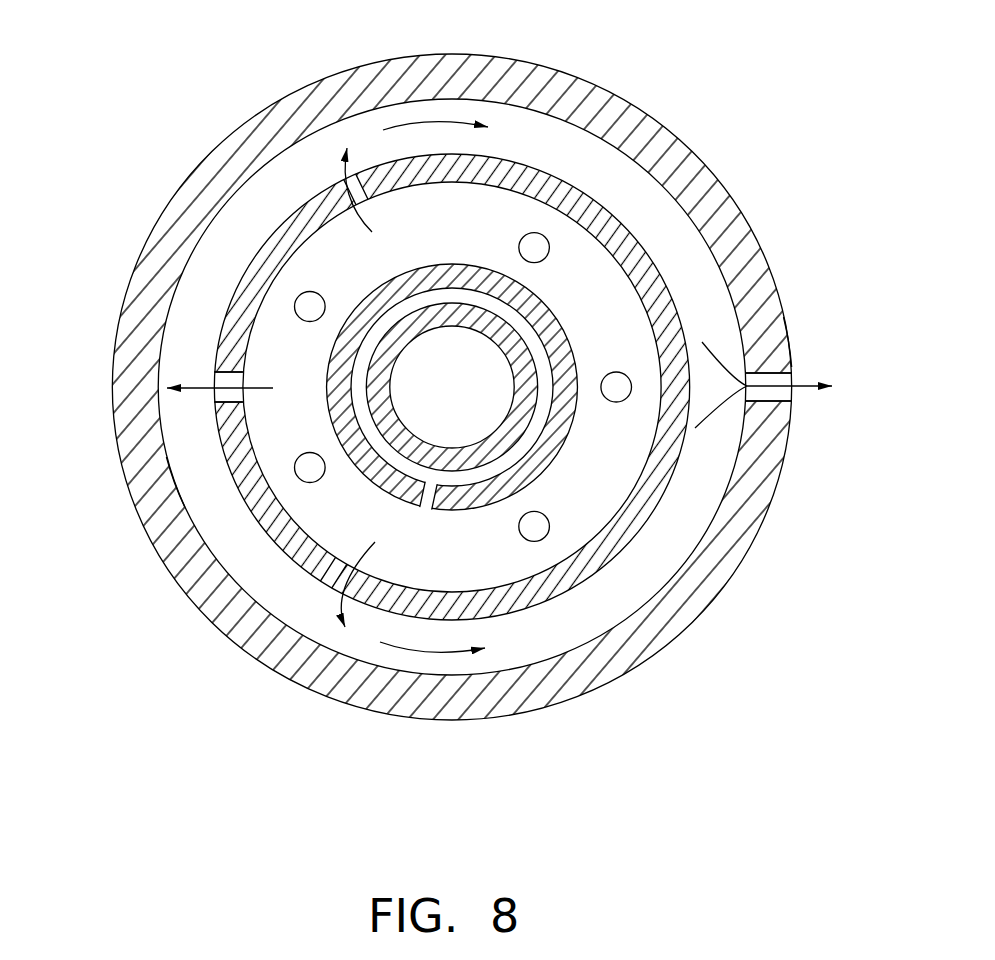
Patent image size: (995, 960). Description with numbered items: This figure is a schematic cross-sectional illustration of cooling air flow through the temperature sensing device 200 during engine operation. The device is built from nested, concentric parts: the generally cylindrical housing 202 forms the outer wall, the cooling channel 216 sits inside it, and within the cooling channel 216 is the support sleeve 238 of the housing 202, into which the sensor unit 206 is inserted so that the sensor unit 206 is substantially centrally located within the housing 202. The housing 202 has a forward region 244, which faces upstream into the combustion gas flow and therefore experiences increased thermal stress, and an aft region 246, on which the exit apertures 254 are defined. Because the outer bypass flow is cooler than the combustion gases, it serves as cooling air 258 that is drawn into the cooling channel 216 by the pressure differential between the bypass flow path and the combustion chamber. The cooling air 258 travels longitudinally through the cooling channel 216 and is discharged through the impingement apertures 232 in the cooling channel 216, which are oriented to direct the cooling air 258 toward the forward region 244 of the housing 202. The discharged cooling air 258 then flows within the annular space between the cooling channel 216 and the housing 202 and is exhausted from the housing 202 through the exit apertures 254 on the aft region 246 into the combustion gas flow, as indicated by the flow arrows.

The temperature sensing device 200 is at (231, 62).
The housing 202 is at (640, 93).
The sensor unit 206 is at (430, 471).
The cooling channel 216 is at (608, 565).
The impingement apertures 232 is at (320, 195).
The support sleeve 238 is at (568, 450).
The forward region 244 is at (155, 495).
The aft region 246 is at (760, 291).
The exit apertures 254 is at (788, 402).
The cooling air 258 is at (437, 122).